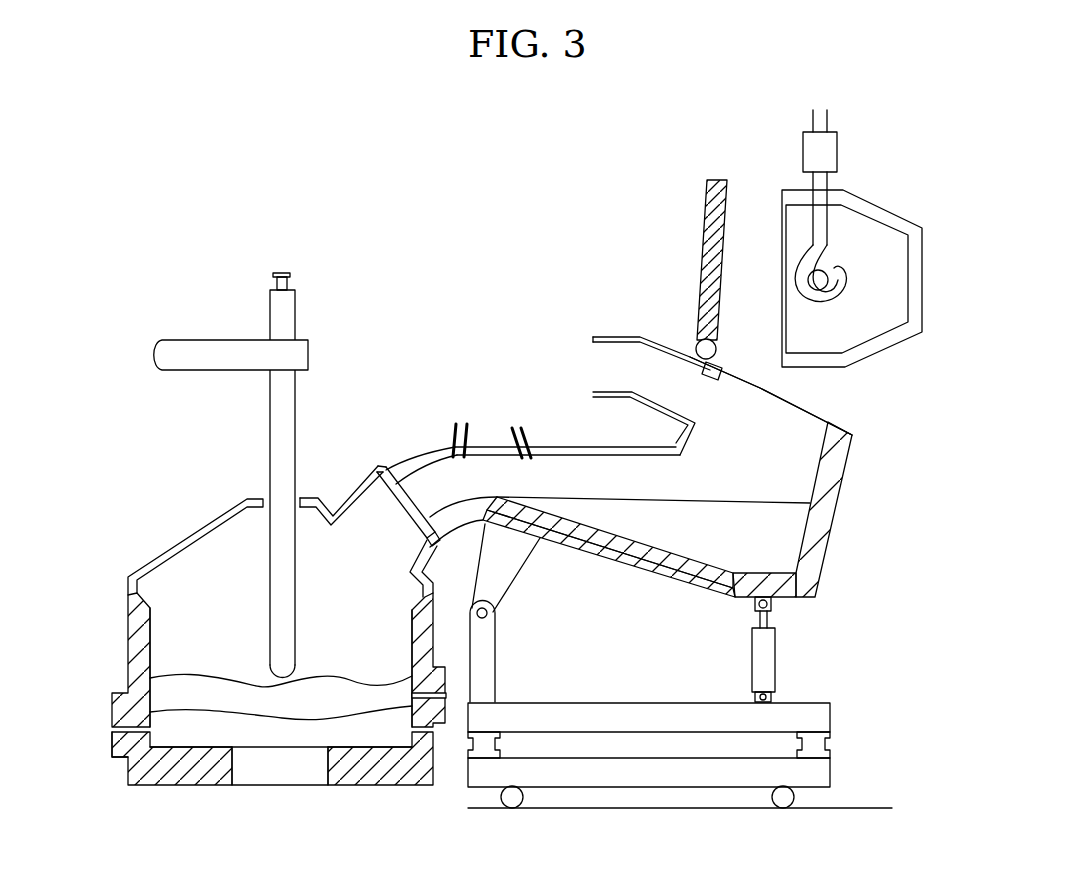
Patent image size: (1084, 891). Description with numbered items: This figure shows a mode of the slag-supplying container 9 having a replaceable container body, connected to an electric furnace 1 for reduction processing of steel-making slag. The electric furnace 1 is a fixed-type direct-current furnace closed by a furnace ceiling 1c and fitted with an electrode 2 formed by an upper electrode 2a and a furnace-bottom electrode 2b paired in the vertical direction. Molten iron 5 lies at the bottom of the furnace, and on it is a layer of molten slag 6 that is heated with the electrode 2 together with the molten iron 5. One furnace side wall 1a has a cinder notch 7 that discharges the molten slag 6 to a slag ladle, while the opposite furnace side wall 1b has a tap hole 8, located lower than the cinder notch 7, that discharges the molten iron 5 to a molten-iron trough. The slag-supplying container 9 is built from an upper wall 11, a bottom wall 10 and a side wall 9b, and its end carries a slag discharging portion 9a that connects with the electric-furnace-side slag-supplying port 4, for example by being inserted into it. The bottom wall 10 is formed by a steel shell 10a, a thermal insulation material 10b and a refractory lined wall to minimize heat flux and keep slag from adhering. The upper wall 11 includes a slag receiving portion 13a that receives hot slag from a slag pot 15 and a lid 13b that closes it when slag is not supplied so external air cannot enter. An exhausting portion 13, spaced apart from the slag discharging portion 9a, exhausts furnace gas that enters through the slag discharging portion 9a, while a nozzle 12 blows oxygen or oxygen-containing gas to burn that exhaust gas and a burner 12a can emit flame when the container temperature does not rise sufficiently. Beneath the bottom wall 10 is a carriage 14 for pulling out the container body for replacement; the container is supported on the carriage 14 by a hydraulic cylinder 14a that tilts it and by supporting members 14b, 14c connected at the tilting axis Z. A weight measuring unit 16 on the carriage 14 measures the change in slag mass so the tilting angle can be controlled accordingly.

The electric furnace 1 is at (183, 527).
The furnace side wall 1a is at (420, 738).
The furnace side wall 1b is at (135, 660).
The furnace ceiling 1c is at (158, 556).
The electrode 2 is at (297, 306).
The upper electrode 2a is at (273, 637).
The furnace-bottom electrode 2b is at (284, 770).
The electric-furnace-side slag-supplying port 4 is at (382, 525).
The molten iron 5 is at (197, 730).
The molten slag 6 is at (331, 700).
The cinder notch 7 is at (443, 697).
The tap hole 8 is at (113, 743).
The slag-supplying container 9 is at (850, 465).
The slag discharging portion 9a is at (408, 490).
The side wall 9b is at (820, 535).
The bottom wall 10 is at (797, 588).
The steel shell 10a is at (713, 596).
The thermal insulation material 10b is at (658, 580).
The upper wall 11 is at (568, 443).
The nozzle 12 is at (455, 428).
The burner 12a is at (518, 430).
The exhausting portion 13 is at (598, 338).
The slag receiving portion 13a is at (770, 398).
The lid 13b is at (705, 262).
The carriage 14 is at (817, 773).
The hydraulic cylinder 14a is at (775, 667).
The supporting member 14b is at (503, 578).
The supporting member 14c is at (482, 677).
The slag pot 15 is at (876, 212).
The weight measuring unit 16 is at (828, 742).
The tilting axis Z is at (495, 615).